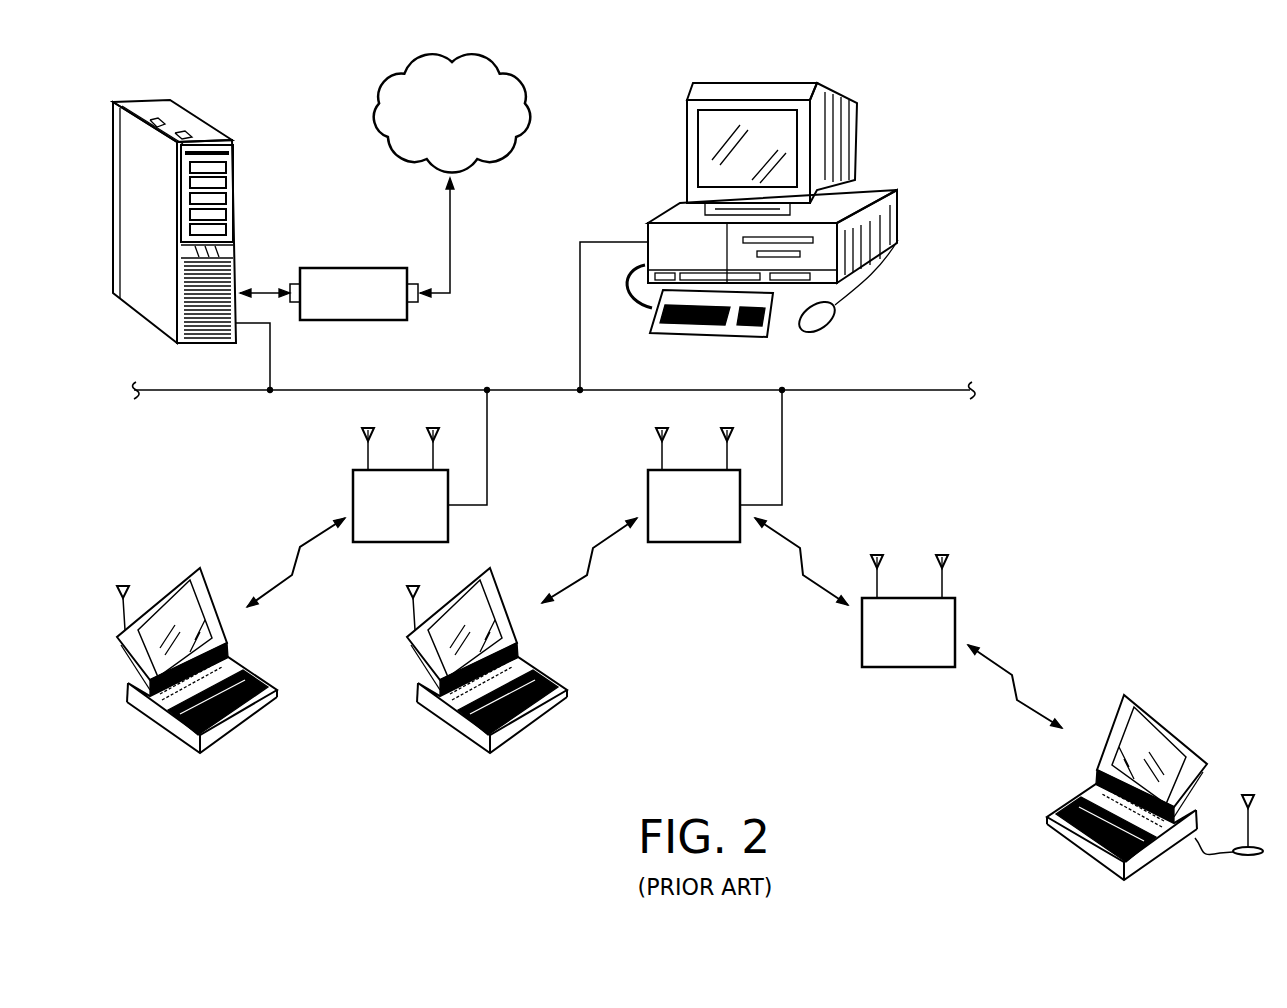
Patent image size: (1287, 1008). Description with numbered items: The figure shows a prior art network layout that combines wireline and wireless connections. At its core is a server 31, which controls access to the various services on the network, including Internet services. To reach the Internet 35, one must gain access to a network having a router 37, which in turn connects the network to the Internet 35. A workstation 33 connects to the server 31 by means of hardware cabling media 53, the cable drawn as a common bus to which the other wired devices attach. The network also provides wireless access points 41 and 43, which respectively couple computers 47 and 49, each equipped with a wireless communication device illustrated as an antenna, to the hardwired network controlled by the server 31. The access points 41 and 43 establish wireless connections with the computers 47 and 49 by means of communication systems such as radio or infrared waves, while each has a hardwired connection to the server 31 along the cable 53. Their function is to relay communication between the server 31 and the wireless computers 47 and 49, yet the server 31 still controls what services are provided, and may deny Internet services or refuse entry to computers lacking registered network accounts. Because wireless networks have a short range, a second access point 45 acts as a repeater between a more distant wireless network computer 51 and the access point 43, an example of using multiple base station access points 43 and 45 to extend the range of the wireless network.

The server 31 is at (185, 112).
The workstation 33 is at (872, 188).
The Internet 35 is at (514, 88).
The router 37 is at (344, 268).
The wireless access point 41 is at (353, 483).
The wireless access point 43 is at (648, 483).
The second access point 45 is at (862, 643).
The computer 47 is at (243, 723).
The computer 49 is at (538, 718).
The wireless network computer 51 is at (1071, 838).
The hardware cabling media 53 is at (531, 388).